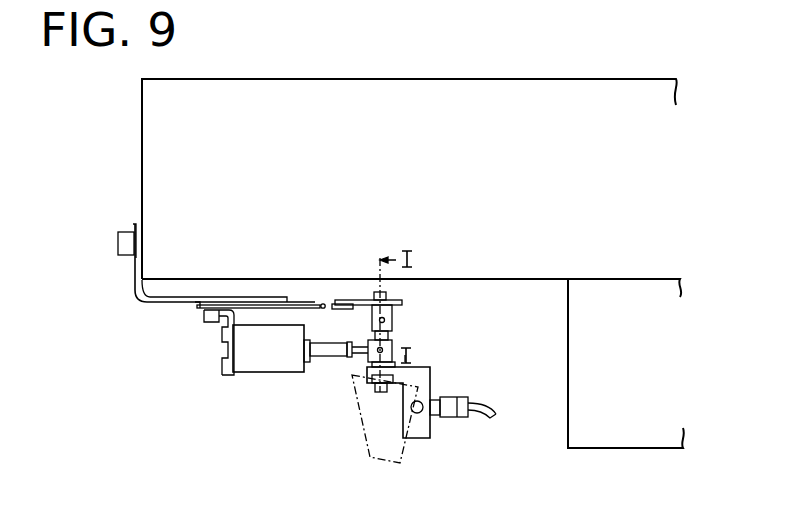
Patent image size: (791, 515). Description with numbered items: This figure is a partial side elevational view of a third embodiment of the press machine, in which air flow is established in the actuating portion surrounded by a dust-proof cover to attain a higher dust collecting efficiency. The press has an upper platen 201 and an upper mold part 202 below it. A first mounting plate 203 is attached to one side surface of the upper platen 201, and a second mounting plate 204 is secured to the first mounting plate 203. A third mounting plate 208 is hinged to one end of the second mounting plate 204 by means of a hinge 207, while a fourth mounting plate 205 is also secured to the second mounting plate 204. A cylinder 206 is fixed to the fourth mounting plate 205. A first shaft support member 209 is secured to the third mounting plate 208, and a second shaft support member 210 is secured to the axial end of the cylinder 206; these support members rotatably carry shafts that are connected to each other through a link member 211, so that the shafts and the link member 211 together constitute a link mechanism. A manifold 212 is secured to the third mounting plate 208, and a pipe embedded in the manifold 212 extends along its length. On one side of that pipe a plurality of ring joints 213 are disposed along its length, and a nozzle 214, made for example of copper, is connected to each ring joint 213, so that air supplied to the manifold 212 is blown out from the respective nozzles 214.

The upper platen 201 is at (141, 130).
The upper mold part 202 is at (628, 449).
The first mounting plate 203 is at (135, 280).
The second mounting plate 204 is at (200, 308).
The fourth mounting plate 205 is at (222, 352).
The cylinder 206 is at (266, 373).
The hinge 207 is at (323, 303).
The third mounting plate 208 is at (402, 301).
The first shaft support member 209 is at (392, 318).
The second shaft support member 210 is at (367, 357).
The link member 211 is at (390, 336).
The manifold 212 is at (430, 375).
The ring joint 213 is at (450, 418).
The nozzle 214 is at (497, 404).